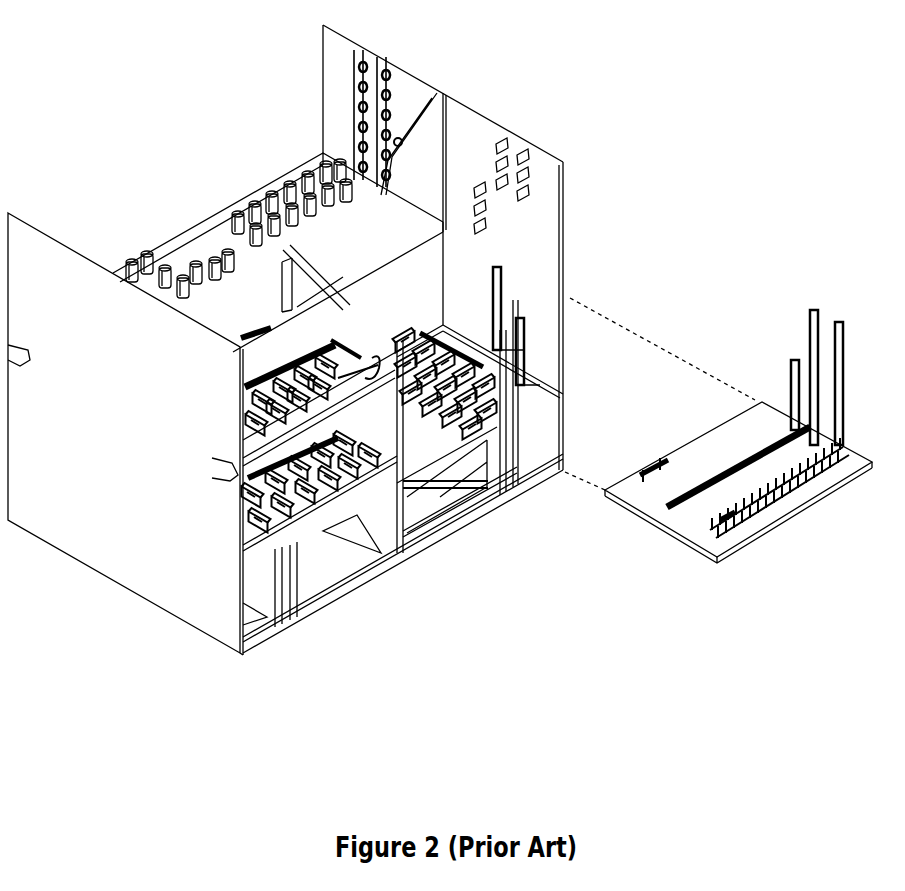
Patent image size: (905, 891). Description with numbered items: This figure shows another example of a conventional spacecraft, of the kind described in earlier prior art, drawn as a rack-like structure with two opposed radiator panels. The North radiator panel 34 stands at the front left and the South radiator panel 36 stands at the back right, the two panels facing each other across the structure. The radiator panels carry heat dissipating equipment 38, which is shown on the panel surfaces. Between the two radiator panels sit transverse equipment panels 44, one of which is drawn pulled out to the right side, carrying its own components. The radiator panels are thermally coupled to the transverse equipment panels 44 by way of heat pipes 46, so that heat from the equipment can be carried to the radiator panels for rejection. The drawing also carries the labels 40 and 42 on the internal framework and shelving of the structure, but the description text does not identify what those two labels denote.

The North radiator panel 34 is at (105, 543).
The South radiator panel 36 is at (490, 116).
The heat dissipating equipment 38 is at (528, 200).
The frame 40 is at (261, 538).
The shelf 42 is at (393, 260).
The transverse equipment panels 44 is at (710, 430).
The heat pipes 46 is at (505, 290).